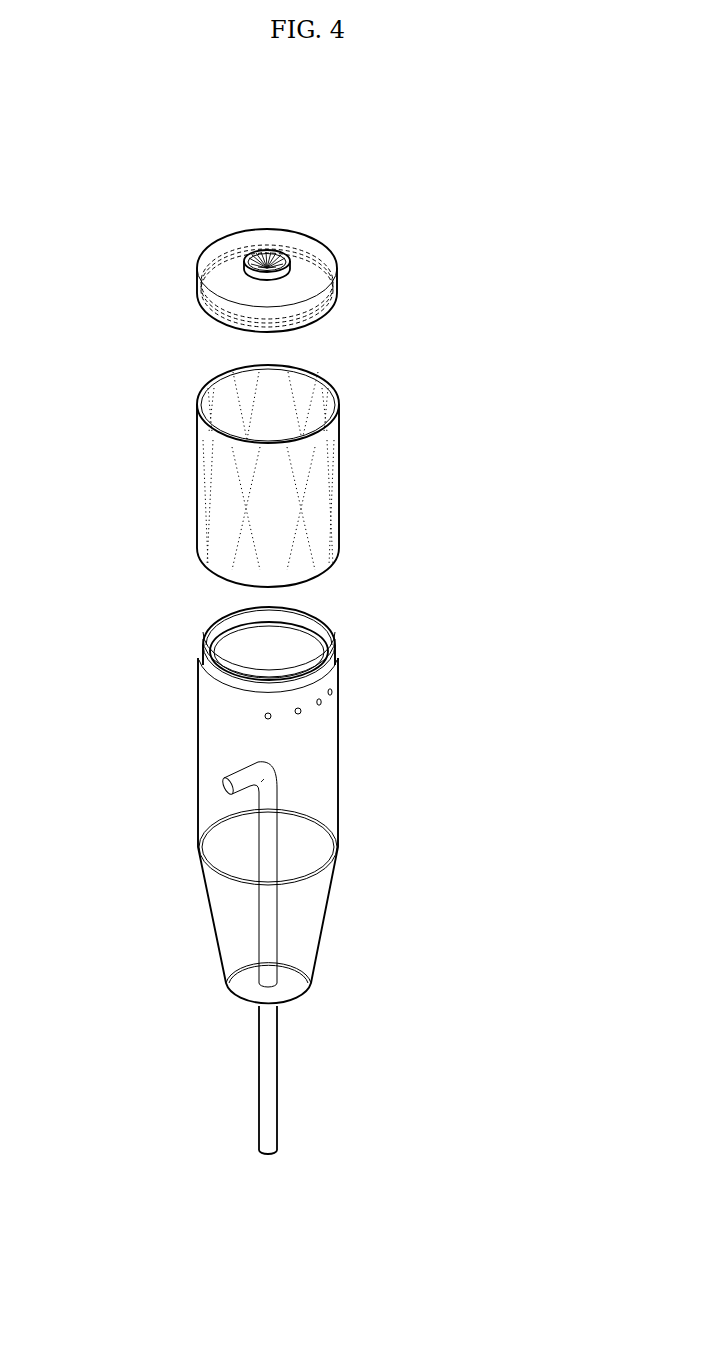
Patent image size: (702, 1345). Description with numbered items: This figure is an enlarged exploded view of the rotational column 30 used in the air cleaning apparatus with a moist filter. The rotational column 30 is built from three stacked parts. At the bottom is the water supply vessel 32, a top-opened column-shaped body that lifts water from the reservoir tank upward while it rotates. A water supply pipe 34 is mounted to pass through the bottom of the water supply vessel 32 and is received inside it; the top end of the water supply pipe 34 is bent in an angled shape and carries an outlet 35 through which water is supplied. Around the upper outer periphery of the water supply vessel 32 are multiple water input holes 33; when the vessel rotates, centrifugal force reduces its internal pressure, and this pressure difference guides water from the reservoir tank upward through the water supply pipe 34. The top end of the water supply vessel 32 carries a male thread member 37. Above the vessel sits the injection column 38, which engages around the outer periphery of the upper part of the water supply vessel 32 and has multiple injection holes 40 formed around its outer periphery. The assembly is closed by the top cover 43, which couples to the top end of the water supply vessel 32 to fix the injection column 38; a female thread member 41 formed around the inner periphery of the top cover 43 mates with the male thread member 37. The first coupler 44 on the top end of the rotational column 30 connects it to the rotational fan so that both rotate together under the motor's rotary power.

The rotational column 30 is at (463, 311).
The top cover 43 is at (222, 247).
The first coupler 44 is at (274, 247).
The female thread member 41 is at (312, 322).
The injection column 38 is at (185, 444).
The injection holes 40 is at (302, 497).
The water supply vessel 32 is at (178, 703).
The male thread member 37 is at (328, 663).
The water input holes 33 is at (272, 716).
The water supply pipe 34 is at (268, 843).
The outlet 35 is at (224, 790).